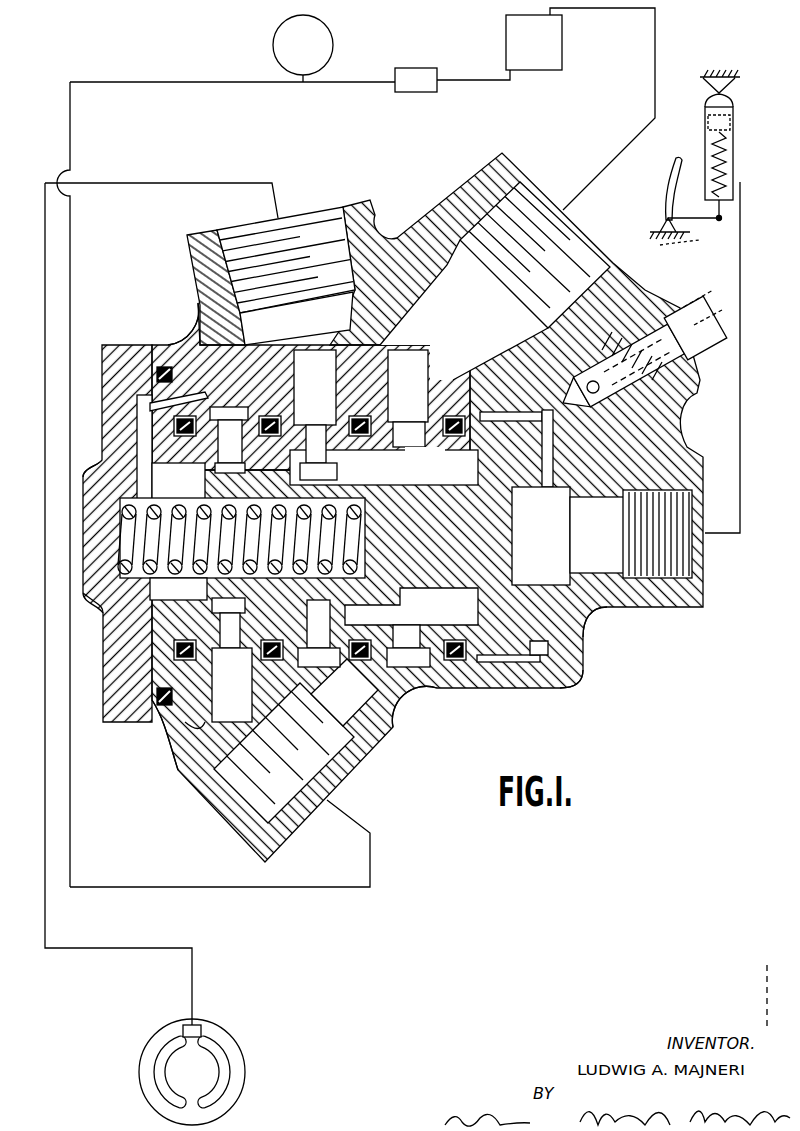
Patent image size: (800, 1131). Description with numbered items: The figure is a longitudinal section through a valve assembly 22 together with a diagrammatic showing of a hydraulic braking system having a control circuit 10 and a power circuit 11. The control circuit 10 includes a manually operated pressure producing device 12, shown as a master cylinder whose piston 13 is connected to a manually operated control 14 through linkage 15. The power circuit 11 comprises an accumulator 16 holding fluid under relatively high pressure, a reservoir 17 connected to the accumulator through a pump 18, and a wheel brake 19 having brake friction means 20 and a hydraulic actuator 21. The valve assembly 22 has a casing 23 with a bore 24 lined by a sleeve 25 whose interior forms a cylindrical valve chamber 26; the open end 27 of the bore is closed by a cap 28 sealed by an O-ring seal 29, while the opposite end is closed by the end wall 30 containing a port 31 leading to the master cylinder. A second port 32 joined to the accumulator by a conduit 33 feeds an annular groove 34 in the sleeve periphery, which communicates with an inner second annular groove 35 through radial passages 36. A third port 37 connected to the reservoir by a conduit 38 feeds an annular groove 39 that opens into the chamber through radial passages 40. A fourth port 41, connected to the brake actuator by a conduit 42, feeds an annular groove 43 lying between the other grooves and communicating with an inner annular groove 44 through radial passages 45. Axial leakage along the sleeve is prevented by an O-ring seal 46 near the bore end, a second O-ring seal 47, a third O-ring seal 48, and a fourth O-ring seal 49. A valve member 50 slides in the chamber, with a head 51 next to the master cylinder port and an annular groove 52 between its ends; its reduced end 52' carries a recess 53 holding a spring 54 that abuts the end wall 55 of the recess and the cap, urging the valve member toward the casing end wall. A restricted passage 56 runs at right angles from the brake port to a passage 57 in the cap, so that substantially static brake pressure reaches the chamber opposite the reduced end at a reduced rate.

The control circuit 10 is at (745, 450).
The power circuit 11 is at (71, 299).
The pressure producing device 12 is at (735, 150).
The piston 13 is at (737, 121).
The manually operated control 14 is at (676, 178).
The linkage 15 is at (703, 224).
The accumulator 16 is at (330, 40).
The reservoir 17 is at (553, 65).
The pump 18 is at (425, 93).
The wheel brake 19 is at (251, 1052).
The brake friction means 20 is at (225, 1043).
The hydraulic actuator 21 is at (200, 1026).
The valve assembly 22 is at (453, 692).
The casing 23 is at (626, 292).
The bore 24 is at (468, 668).
The sleeve 25 is at (545, 683).
The valve chamber 26 is at (142, 607).
The end of bore 27 is at (113, 545).
The cap 28 is at (118, 445).
The O-ring seal 29 is at (163, 710).
The end wall 30 is at (548, 648).
The port 31 is at (653, 558).
The second port 32 is at (328, 760).
The conduit 33 is at (295, 888).
The annular groove 34 is at (212, 404).
The second annular groove 35 is at (206, 486).
The radial passages 36 is at (229, 527).
The third port 37 is at (565, 255).
The conduit 38 is at (612, 160).
The annular groove 39 is at (420, 418).
The radial passages 40 is at (409, 434).
The fourth port 41 is at (305, 232).
The conduit 42 is at (228, 183).
The annular groove 43 is at (330, 416).
The annular groove 44 is at (338, 479).
The radial passages 45 is at (318, 452).
The O-ring seal 46 is at (190, 737).
The second O-ring seal 47 is at (385, 742).
The third O-ring seal 48 is at (414, 706).
The fourth O-ring seal 49 is at (513, 688).
The valve member 50 is at (425, 464).
The head 51 is at (640, 620).
The annular groove 52 is at (411, 606).
The reduced end 52' is at (232, 685).
The recess 53 is at (241, 549).
The spring 54 is at (110, 520).
The end wall of recess 55 is at (370, 540).
The restricted passage 56 is at (197, 300).
The passage 57 is at (135, 397).